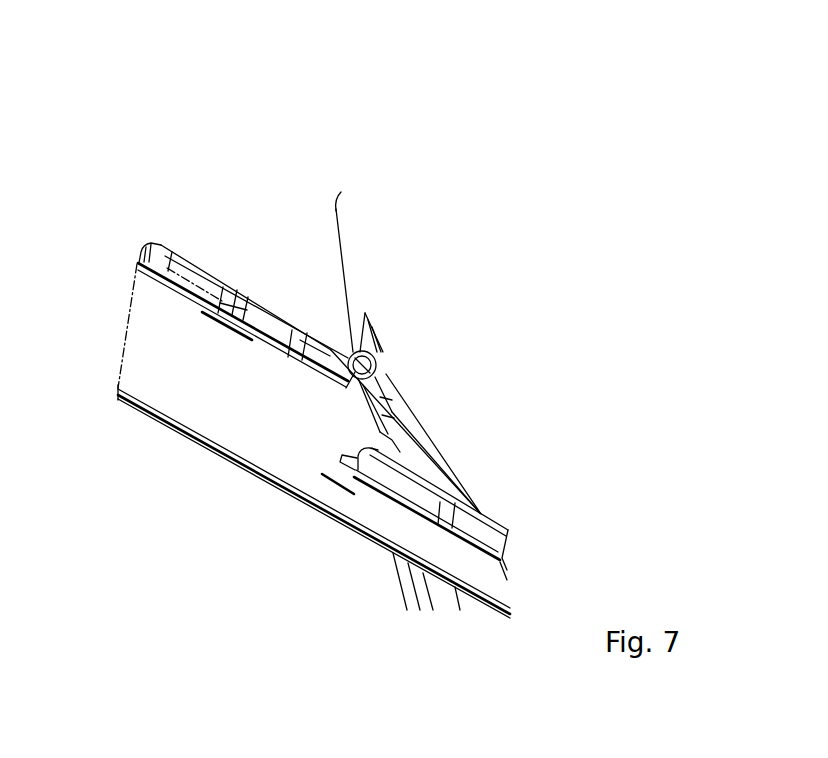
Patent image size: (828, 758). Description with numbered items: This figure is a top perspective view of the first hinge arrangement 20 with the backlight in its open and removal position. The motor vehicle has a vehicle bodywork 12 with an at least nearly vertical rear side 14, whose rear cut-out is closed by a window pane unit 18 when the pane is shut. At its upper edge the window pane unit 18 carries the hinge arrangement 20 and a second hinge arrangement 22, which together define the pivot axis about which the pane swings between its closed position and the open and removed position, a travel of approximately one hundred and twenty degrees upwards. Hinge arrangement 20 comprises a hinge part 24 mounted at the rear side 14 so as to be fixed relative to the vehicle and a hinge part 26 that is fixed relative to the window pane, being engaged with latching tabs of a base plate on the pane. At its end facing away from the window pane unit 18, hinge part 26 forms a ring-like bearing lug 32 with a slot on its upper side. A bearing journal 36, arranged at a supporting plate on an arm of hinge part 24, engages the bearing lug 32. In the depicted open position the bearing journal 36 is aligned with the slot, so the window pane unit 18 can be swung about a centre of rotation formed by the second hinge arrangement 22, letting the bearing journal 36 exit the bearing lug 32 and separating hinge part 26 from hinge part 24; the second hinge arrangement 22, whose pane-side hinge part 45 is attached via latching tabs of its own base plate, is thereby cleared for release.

The vehicle bodywork 12 is at (335, 206).
The rear side 14 is at (279, 214).
The window pane unit 18 is at (219, 407).
The hinge arrangement 20 is at (297, 330).
The hinge arrangement 22 is at (512, 538).
The hinge part 24 is at (382, 378).
The hinge part 26 is at (333, 347).
The bearing lug 32 is at (368, 320).
The bearing journal 36 is at (385, 350).
The hinge part 45 is at (482, 514).